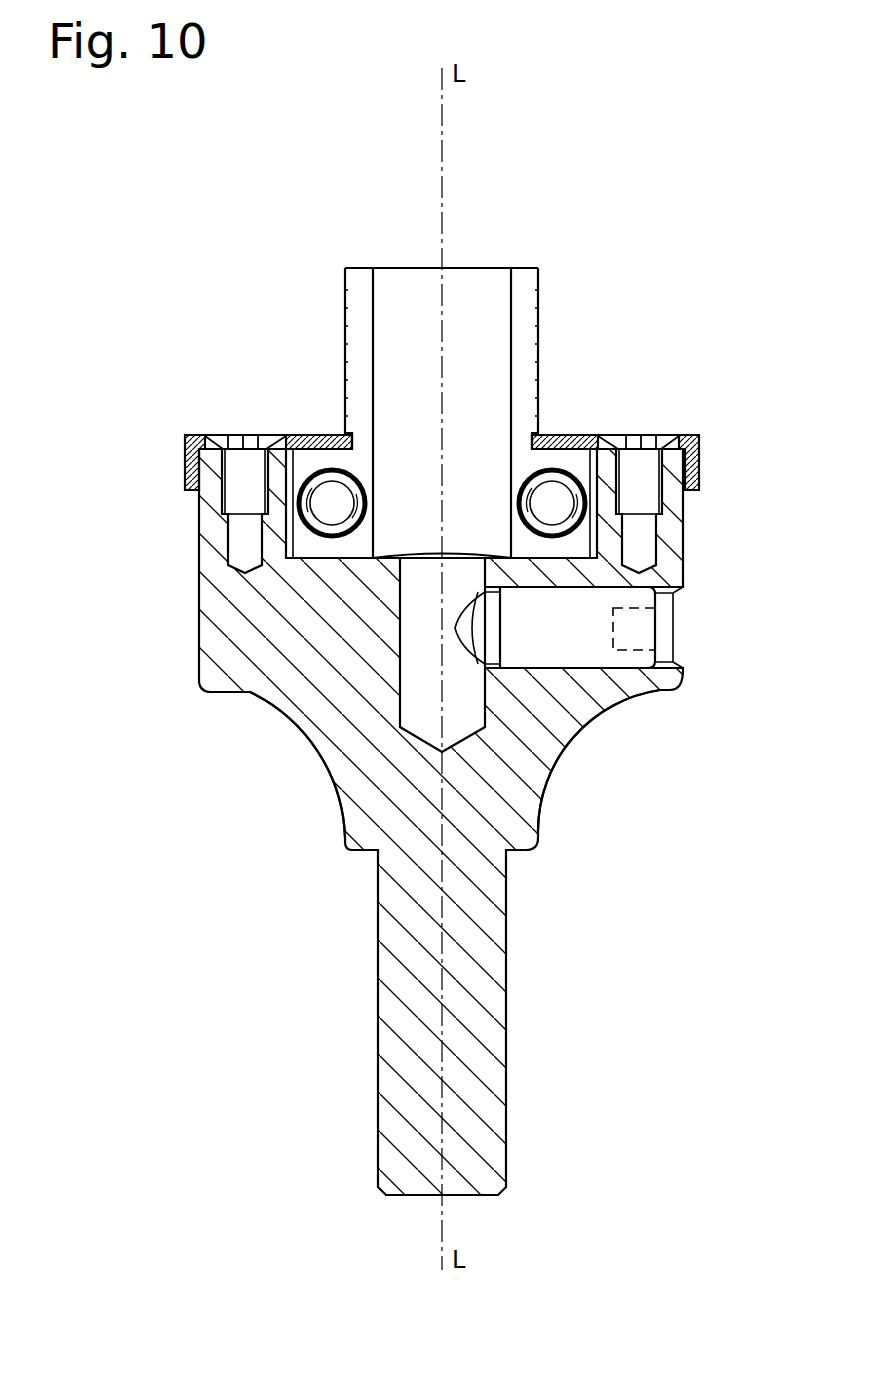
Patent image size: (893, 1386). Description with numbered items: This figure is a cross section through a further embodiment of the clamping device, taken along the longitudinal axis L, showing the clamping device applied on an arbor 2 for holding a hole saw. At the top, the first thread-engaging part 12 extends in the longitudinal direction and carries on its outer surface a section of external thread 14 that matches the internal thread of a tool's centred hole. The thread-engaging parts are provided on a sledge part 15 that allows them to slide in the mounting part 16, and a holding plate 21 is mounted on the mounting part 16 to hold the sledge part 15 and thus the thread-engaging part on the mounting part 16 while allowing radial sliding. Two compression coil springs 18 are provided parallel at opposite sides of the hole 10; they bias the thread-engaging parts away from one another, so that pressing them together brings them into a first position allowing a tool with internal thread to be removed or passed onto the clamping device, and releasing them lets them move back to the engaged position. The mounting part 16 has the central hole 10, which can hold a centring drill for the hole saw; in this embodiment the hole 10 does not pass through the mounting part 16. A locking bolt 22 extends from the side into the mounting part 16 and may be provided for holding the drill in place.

The arbor 2 is at (482, 1023).
The hole 10 is at (452, 298).
The first thread-engaging part 12 is at (355, 295).
The external thread 14 is at (345, 332).
The sledge part 15 is at (348, 548).
The mounting part 16 is at (533, 747).
The spring 18 is at (320, 477).
The holding plate 21 is at (188, 462).
The locking bolt 22 is at (637, 622).